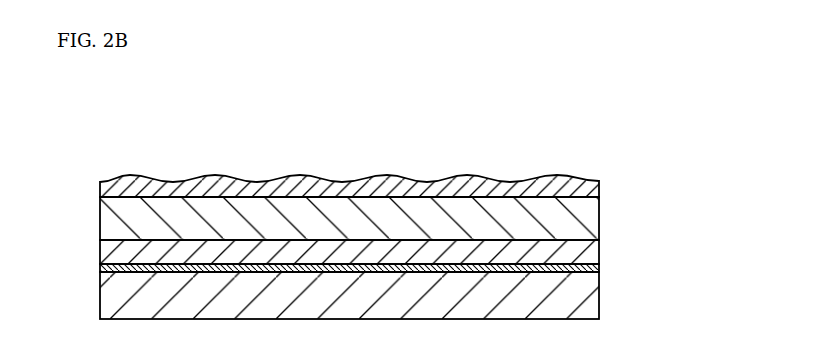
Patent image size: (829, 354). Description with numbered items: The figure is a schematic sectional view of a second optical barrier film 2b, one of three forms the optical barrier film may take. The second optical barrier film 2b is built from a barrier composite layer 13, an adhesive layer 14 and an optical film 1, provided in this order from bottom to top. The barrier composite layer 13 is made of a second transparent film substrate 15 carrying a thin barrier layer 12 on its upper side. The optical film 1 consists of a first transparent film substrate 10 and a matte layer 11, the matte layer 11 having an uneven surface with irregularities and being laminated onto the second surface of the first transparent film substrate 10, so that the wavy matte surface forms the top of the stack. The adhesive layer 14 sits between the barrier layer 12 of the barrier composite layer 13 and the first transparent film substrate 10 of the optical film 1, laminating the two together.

The second optical barrier film 2b is at (645, 127).
The optical film 1 is at (673, 180).
The matte layer 11 is at (600, 184).
The first transparent film substrate 10 is at (600, 216).
The adhesive layer 14 is at (600, 247).
The barrier composite layer 13 is at (673, 260).
The barrier layer 12 is at (600, 267).
The second transparent film substrate 15 is at (600, 299).